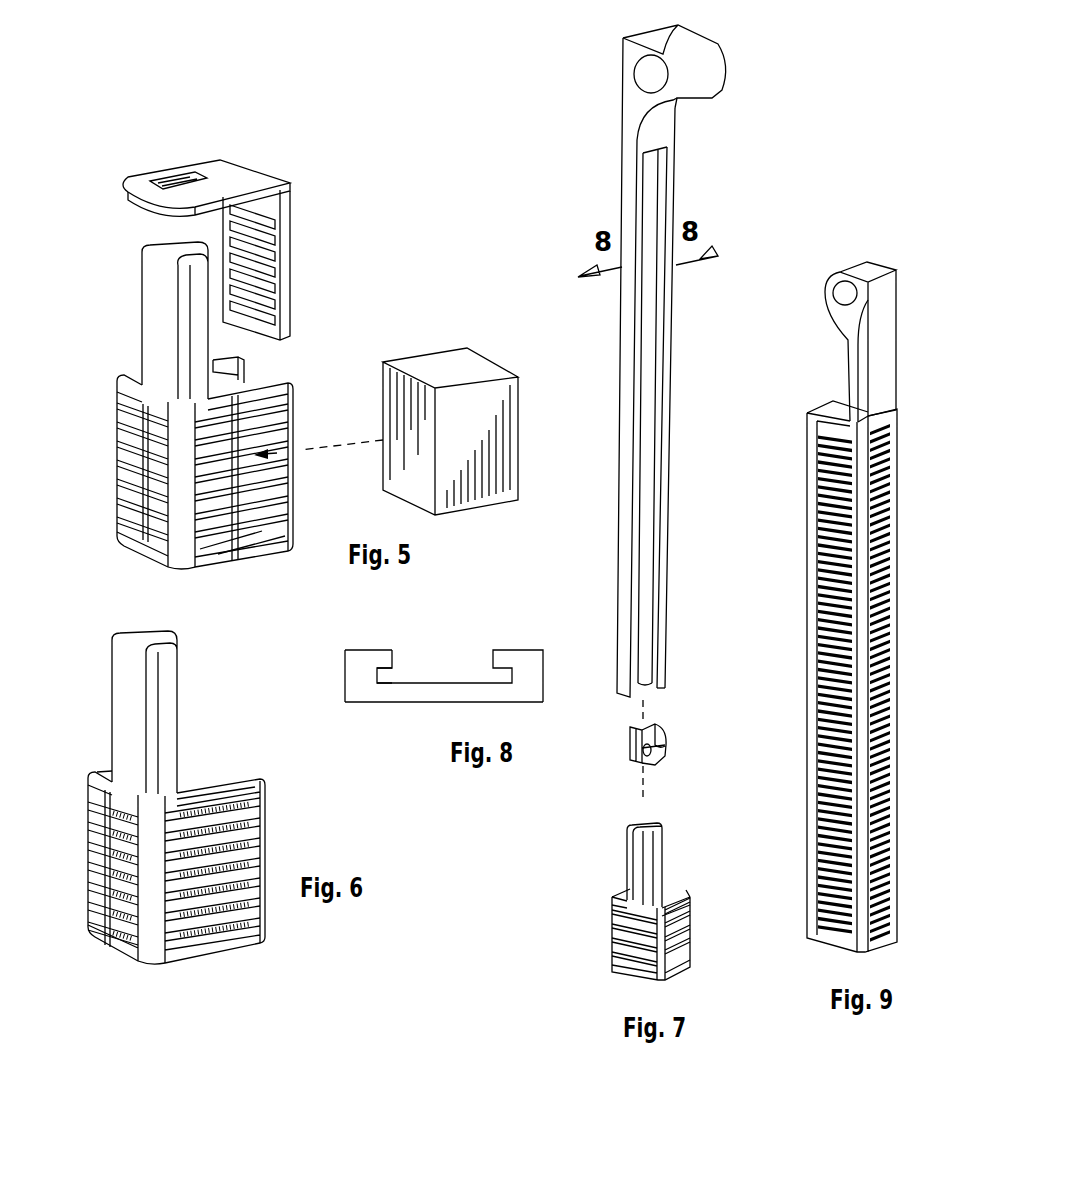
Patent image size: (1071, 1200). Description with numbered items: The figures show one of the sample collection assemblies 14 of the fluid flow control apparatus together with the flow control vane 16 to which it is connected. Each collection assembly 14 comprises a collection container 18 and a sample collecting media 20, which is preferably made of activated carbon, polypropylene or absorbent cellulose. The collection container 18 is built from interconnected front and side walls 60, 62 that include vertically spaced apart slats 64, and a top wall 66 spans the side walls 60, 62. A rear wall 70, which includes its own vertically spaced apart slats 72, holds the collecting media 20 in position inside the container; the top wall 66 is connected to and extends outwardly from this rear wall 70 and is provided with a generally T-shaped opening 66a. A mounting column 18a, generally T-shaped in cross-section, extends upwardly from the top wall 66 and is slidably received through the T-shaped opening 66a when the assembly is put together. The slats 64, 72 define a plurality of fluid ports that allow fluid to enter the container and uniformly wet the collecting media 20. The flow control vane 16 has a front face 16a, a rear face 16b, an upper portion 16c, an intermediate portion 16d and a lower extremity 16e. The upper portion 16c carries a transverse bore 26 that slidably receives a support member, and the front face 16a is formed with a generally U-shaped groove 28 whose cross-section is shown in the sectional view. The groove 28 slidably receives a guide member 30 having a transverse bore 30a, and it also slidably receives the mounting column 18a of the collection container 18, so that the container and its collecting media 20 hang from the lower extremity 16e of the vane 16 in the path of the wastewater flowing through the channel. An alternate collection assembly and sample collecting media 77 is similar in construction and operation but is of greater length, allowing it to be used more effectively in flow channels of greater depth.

In FIG. 5, the sample collection assembly 14 is at (418, 321).
In FIG. 7, the sample collection assembly 14 is at (610, 951).
In FIG. 8, the flow control vane 16 is at (345, 686).
In FIG. 7, the flow control vane 16 is at (622, 97).
In FIG. 9, the flow control vane 16 is at (882, 318).
In FIG. 8, the front face 16a is at (368, 650).
In FIG. 7, the front face 16a is at (668, 352).
In FIG. 8, the rear face 16b is at (490, 702).
In FIG. 7, the rear face 16b is at (626, 568).
In FIG. 7, the upper portion 16c is at (720, 48).
In FIG. 7, the intermediate portion 16d is at (652, 436).
In FIG. 7, the lower extremity 16e is at (662, 690).
In FIG. 5, the collection container 18 is at (295, 363).
In FIG. 6, the collection container 18 is at (277, 791).
In FIG. 5, the mounting column 18a is at (155, 315).
In FIG. 6, the mounting column 18a is at (180, 676).
In FIG. 7, the mounting column 18a is at (665, 848).
In FIG. 9, the mounting column 18a is at (848, 345).
In FIG. 5, the sample collecting media 20 is at (458, 376).
In FIG. 7, the transverse bore 26 is at (645, 75).
In FIG. 9, the transverse bore 26 is at (838, 293).
In FIG. 8, the U-shaped groove 28 is at (388, 675).
In FIG. 7, the U-shaped groove 28 is at (650, 597).
In FIG. 7, the guide member 30 is at (660, 748).
In FIG. 7, the transverse bore 30a is at (640, 750).
In FIG. 5, the front wall 60 is at (130, 394).
In FIG. 6, the front wall 60 is at (85, 790).
In FIG. 5, the side wall 62 is at (262, 398).
In FIG. 6, the side wall 62 is at (215, 795).
In FIG. 5, the slats 64 is at (125, 458).
In FIG. 5, the top wall 66 is at (235, 178).
In FIG. 6, the top wall 66 is at (200, 770).
In FIG. 5, the T-shaped opening 66a is at (185, 182).
In FIG. 5, the rear wall 70 is at (292, 236).
In FIG. 6, the rear wall 70 is at (268, 855).
In FIG. 5, the slats 72 is at (245, 265).
In FIG. 9, the alternate collection assembly and sample collecting media 77 is at (806, 529).